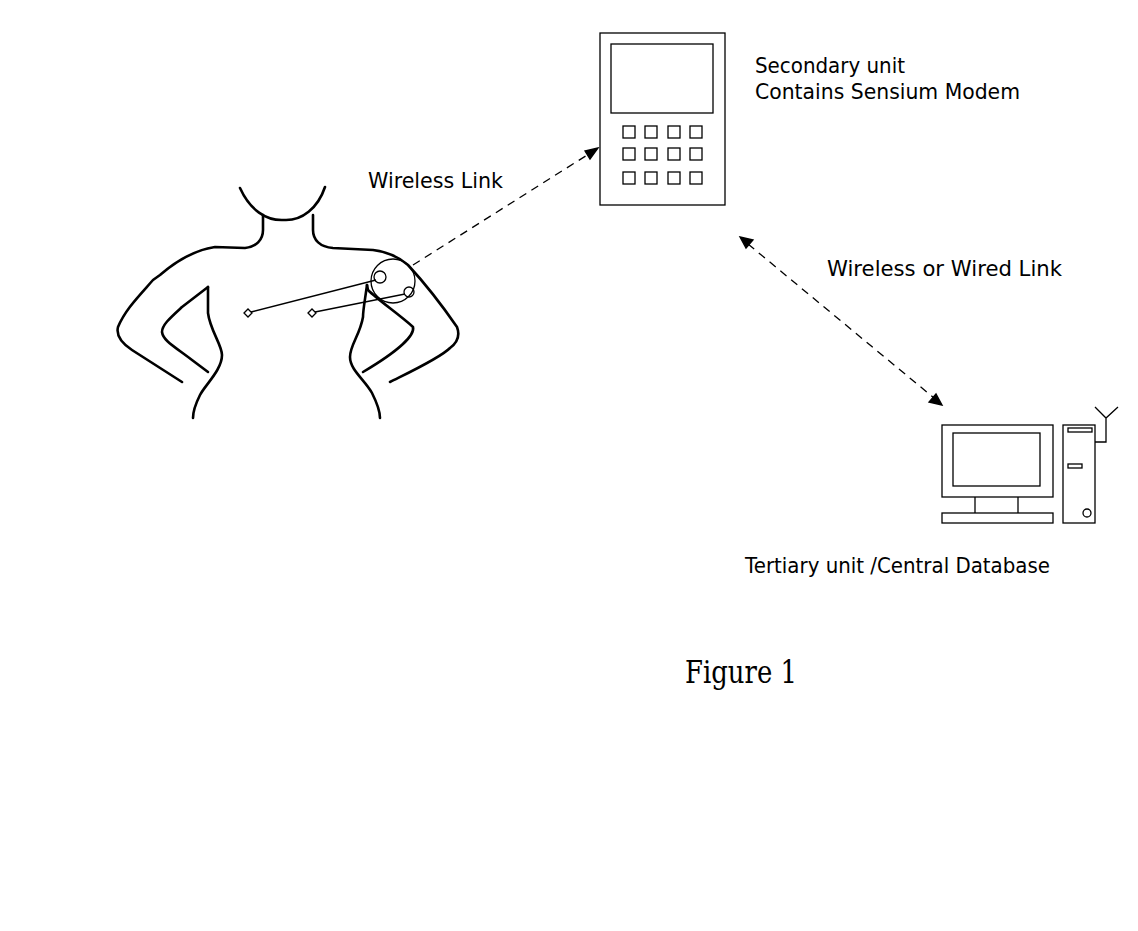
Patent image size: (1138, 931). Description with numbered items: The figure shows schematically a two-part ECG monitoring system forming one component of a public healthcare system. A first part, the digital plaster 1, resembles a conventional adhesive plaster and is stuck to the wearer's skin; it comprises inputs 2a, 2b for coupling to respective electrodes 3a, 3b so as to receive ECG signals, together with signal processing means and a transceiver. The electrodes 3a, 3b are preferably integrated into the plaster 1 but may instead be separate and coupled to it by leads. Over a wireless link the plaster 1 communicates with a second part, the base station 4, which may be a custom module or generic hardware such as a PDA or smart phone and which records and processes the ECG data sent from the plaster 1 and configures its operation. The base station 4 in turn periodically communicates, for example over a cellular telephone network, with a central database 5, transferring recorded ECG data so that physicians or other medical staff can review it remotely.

The digital plaster 1 is at (403, 278).
The input 2a is at (299, 315).
The input 2b is at (352, 325).
The electrode 3a is at (374, 277).
The electrode 3b is at (414, 292).
The base station 4 is at (603, 115).
The central database 5 is at (1008, 442).